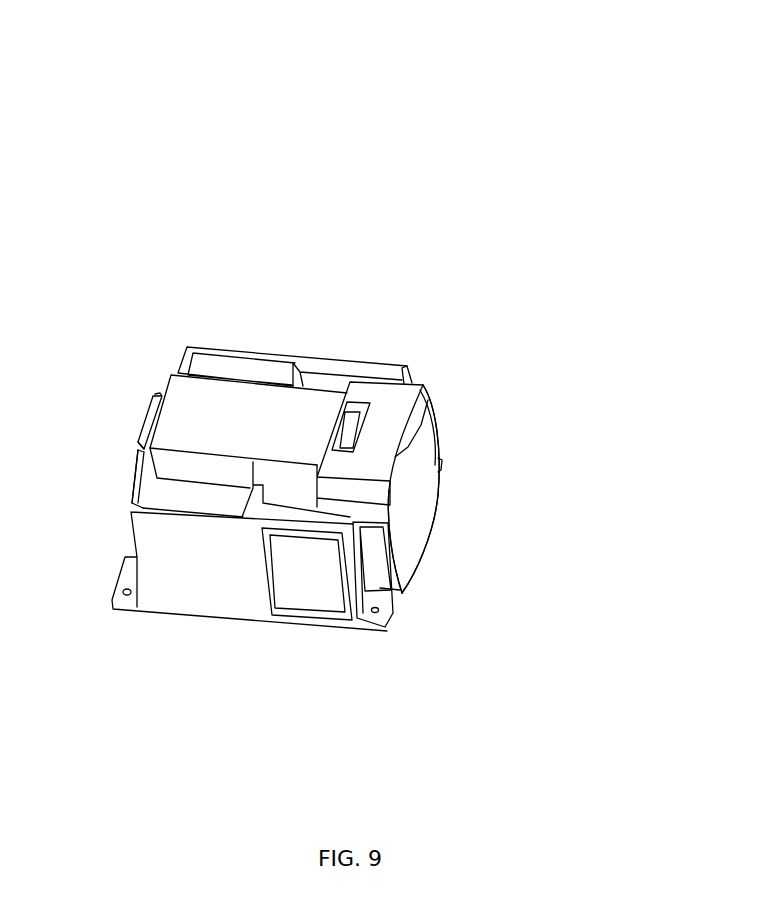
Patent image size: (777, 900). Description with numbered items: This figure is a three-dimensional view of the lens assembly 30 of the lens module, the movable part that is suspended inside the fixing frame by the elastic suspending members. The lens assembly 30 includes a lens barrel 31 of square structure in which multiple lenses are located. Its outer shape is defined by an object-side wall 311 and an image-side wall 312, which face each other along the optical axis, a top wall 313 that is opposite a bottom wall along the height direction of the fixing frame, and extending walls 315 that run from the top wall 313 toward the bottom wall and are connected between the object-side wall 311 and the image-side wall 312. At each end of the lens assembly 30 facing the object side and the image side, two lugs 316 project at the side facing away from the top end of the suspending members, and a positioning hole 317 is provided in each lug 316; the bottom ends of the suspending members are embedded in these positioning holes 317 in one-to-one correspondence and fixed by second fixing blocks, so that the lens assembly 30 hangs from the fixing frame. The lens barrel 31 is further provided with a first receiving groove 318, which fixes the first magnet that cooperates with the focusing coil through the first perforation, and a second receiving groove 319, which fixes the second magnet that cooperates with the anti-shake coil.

The lens assembly 30 is at (320, 379).
The lens barrel 31 is at (412, 388).
The object-side wall 311 is at (448, 440).
The image-side wall 312 is at (115, 437).
The top wall 313 is at (303, 398).
The extending wall 315 is at (182, 597).
The lug 316 is at (383, 607).
The positioning hole 317 is at (393, 617).
The first receiving groove 318 is at (332, 603).
The second receiving groove 319 is at (228, 375).